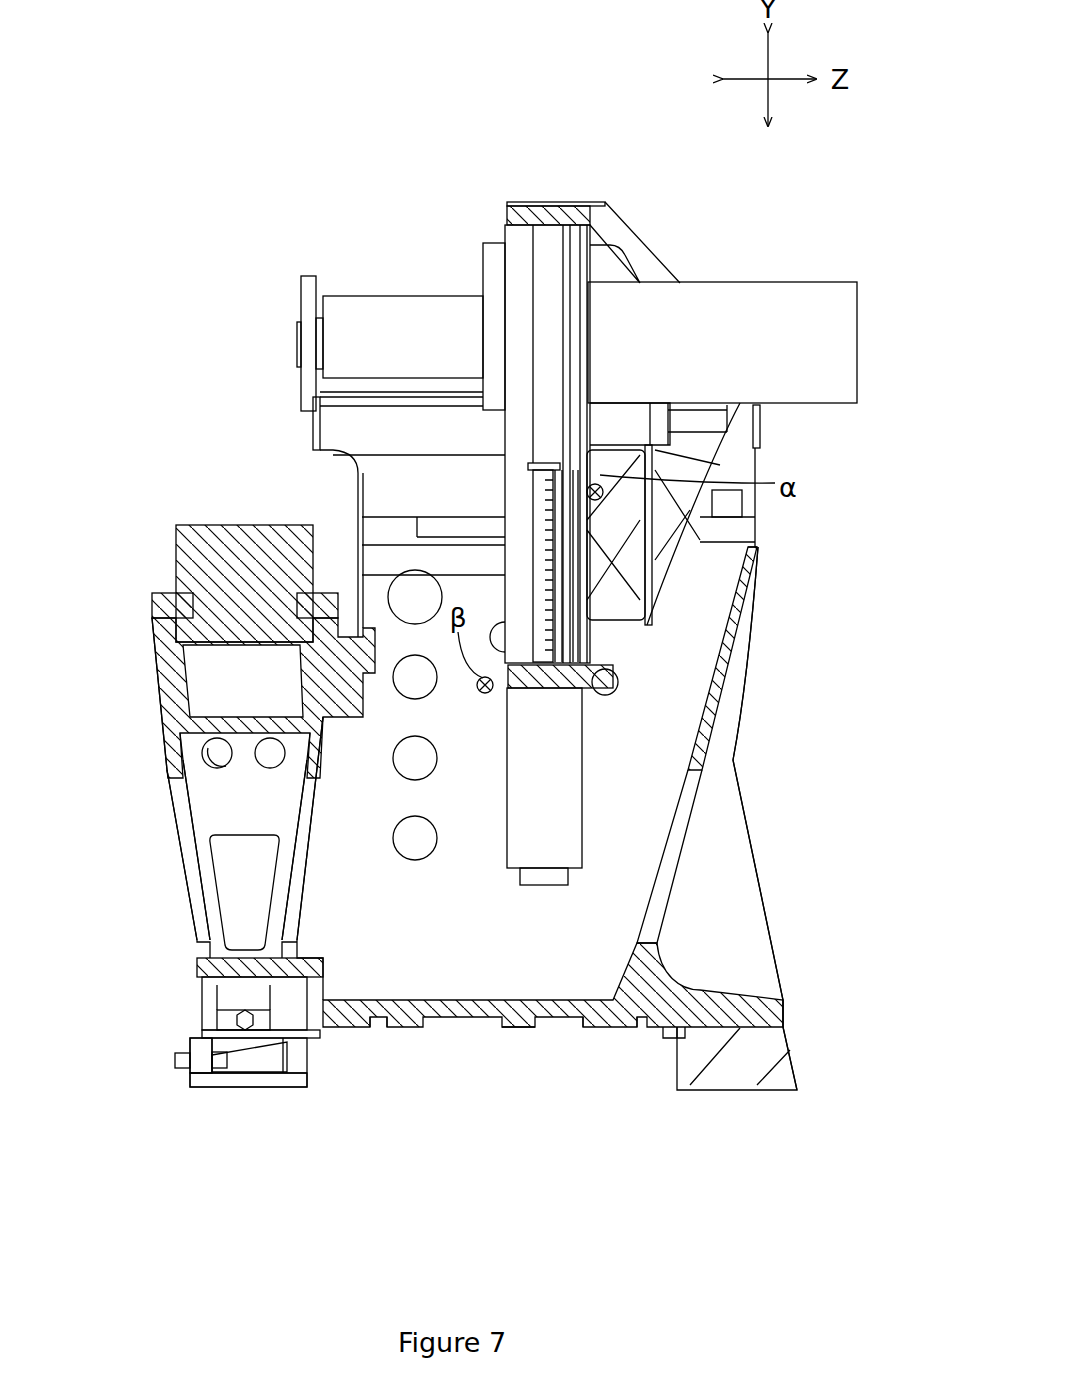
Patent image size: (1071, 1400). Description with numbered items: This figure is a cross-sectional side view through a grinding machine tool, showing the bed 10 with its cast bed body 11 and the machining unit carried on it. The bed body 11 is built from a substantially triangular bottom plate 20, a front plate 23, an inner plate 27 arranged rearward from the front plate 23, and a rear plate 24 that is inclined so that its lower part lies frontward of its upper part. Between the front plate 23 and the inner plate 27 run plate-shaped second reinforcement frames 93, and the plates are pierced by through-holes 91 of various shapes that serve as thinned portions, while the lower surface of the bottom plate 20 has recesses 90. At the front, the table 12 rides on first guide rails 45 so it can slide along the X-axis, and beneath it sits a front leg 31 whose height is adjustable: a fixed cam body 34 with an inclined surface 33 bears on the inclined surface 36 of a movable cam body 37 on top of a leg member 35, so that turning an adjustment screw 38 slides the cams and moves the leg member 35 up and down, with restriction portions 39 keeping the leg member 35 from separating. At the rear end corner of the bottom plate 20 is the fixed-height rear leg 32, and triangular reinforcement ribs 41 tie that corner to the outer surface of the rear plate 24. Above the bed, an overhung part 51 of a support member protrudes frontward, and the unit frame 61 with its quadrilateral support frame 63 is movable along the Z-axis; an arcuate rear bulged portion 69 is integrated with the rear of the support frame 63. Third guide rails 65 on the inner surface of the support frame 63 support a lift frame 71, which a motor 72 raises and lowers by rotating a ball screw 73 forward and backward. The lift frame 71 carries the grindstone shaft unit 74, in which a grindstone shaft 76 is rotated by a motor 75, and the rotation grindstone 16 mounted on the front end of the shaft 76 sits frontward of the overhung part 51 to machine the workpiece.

The bed 10 is at (755, 728).
The bed body 11 is at (522, 1030).
The table 12 is at (263, 525).
The rotation grindstone 16 is at (306, 277).
The bottom plate 20 is at (447, 1008).
The front plate 23 is at (160, 752).
The rear plate 24 is at (660, 912).
The inner plate 27 is at (305, 887).
The front leg 31 is at (228, 1088).
The rear leg 32 is at (735, 1090).
The inclined surface 33 is at (290, 1027).
The fixed cam body 34 is at (220, 1042).
The leg member 35 is at (202, 1088).
The inclined surface 36 is at (240, 1043).
The movable cam body 37 is at (267, 1062).
The adjustment screw 38 is at (182, 1080).
The restriction portion 39 is at (197, 1045).
The reinforcement rib 41 is at (757, 908).
The first guide rail 45 is at (170, 633).
The overhung part 51 is at (322, 425).
The unit frame 61 is at (558, 200).
The support frame 63 is at (622, 215).
The third guide rail 65 is at (568, 542).
The rear bulged portion 69 is at (735, 425).
The lift frame 71 is at (498, 240).
The motor 72 is at (543, 855).
The ball screw 73 is at (553, 565).
The grindstone shaft unit 74 is at (392, 292).
The motor 75 is at (742, 283).
The grindstone shaft 76 is at (445, 340).
The recess 90 is at (370, 1019).
The through-hole 91 is at (230, 768).
The second reinforcement frame 93 is at (200, 833).